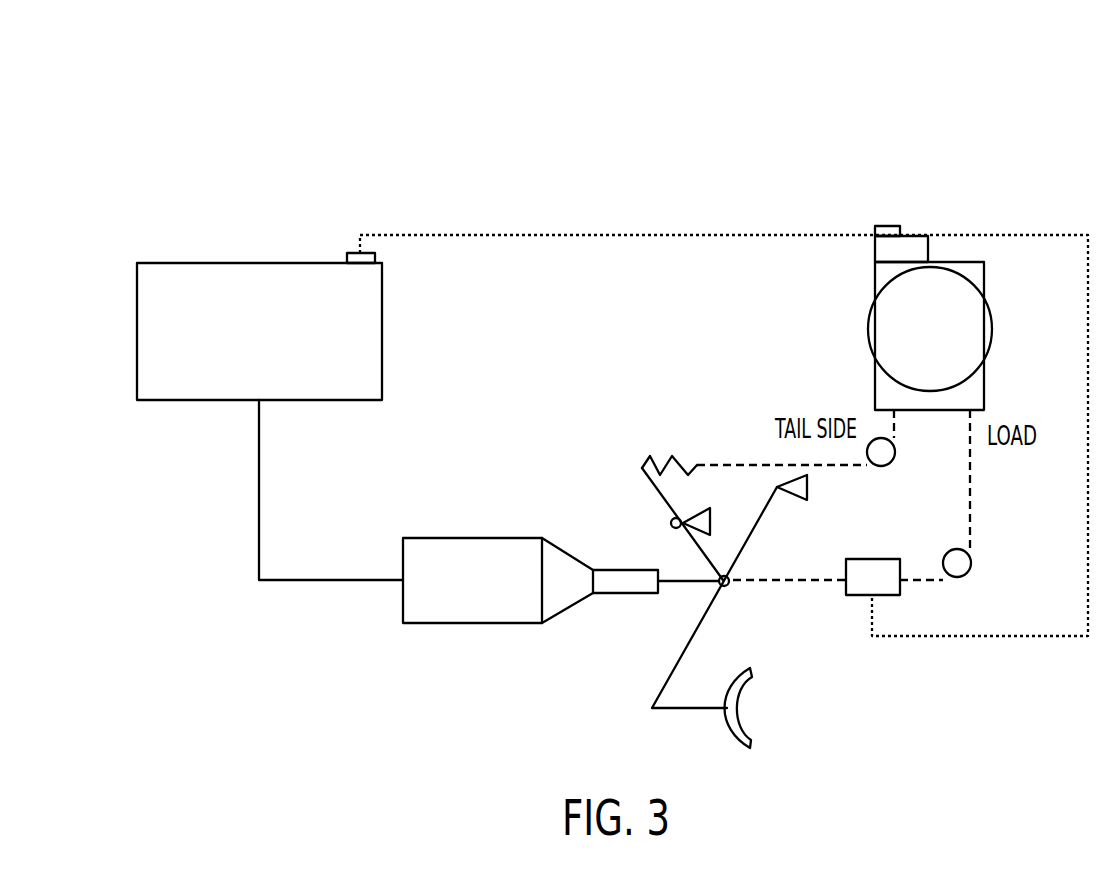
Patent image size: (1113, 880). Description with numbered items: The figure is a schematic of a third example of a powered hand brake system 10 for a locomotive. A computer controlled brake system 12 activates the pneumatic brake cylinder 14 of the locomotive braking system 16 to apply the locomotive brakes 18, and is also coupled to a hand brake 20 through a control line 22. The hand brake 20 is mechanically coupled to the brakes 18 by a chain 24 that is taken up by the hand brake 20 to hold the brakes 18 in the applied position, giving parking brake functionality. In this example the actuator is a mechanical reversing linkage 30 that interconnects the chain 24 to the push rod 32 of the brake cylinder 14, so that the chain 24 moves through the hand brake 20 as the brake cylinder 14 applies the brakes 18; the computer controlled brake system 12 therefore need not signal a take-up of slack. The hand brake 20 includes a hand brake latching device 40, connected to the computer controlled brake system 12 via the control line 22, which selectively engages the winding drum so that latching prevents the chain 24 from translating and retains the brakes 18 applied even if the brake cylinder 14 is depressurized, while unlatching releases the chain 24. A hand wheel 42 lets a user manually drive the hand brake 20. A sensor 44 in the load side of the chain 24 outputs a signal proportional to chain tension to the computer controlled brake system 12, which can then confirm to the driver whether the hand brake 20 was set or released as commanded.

The powered hand brake system 10 is at (633, 90).
The computer controlled brake system 12 is at (240, 263).
The brake cylinder 14 is at (452, 623).
The locomotive braking system 16 is at (700, 622).
The locomotive brakes 18 is at (745, 715).
The hand brake 20 is at (875, 378).
The control line 22 is at (512, 235).
The chain 24 is at (972, 520).
The mechanical reversing linkage 30 is at (634, 450).
The push rod 32 is at (668, 584).
The hand brake latching device 40 is at (928, 245).
The hand wheel 42 is at (991, 318).
The sensor 44 is at (900, 587).